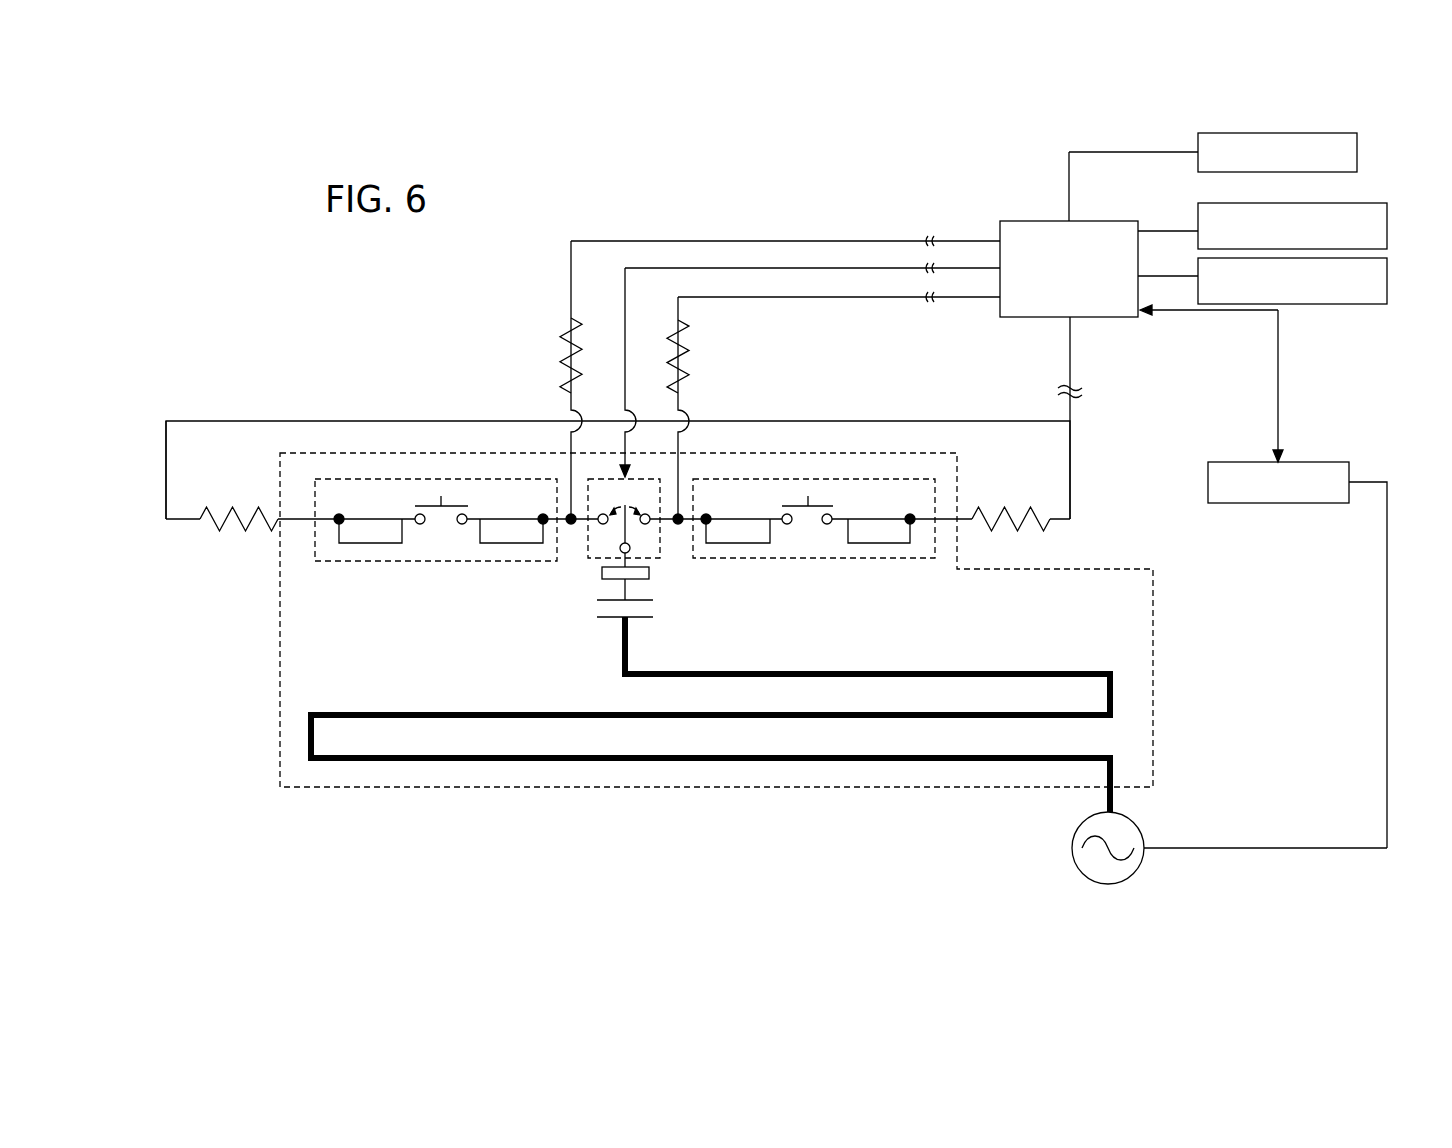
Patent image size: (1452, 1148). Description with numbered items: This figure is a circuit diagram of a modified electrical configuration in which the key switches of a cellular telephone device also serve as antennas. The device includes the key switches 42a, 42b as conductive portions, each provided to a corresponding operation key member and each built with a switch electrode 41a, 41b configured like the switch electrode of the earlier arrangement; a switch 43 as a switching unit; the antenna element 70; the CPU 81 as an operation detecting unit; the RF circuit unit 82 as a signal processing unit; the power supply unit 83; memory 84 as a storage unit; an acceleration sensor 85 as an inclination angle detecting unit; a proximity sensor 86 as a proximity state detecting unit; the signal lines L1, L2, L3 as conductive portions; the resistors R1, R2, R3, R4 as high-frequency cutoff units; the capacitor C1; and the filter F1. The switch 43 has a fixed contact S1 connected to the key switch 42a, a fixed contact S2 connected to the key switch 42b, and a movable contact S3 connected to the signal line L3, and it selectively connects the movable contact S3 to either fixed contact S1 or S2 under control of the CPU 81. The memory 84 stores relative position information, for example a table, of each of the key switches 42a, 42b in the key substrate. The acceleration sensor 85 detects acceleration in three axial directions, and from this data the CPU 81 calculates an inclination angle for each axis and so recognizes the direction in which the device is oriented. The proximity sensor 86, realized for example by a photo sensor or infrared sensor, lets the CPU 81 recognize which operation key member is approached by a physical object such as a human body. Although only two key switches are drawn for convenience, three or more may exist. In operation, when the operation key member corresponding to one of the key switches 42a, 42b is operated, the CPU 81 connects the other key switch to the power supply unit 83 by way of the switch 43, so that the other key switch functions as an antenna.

The antenna element 70 is at (781, 762).
The CPU 81 is at (1124, 220).
The RF circuit unit 82 is at (1330, 461).
The power supply unit 83 is at (1083, 878).
The memory 84 is at (1358, 152).
The acceleration sensor 85 is at (1388, 231).
The proximity sensor 86 is at (1388, 276).
The switch 43 is at (624, 471).
The switch electrode 41a is at (441, 528).
The switch electrode 41b is at (808, 528).
The key switch 42a is at (344, 562).
The key switch 42b is at (897, 562).
The resistor R1 is at (1011, 532).
The resistor R2 is at (239, 533).
The resistor R3 is at (695, 356).
The resistor R4 is at (554, 355).
The signal line L1 is at (1069, 478).
The signal line L2 is at (168, 466).
The signal line L3 is at (622, 590).
The capacitor C1 is at (606, 618).
The filter F1 is at (600, 571).
The fixed contact S1 is at (603, 503).
The fixed contact S2 is at (644, 503).
The movable contact S3 is at (638, 549).